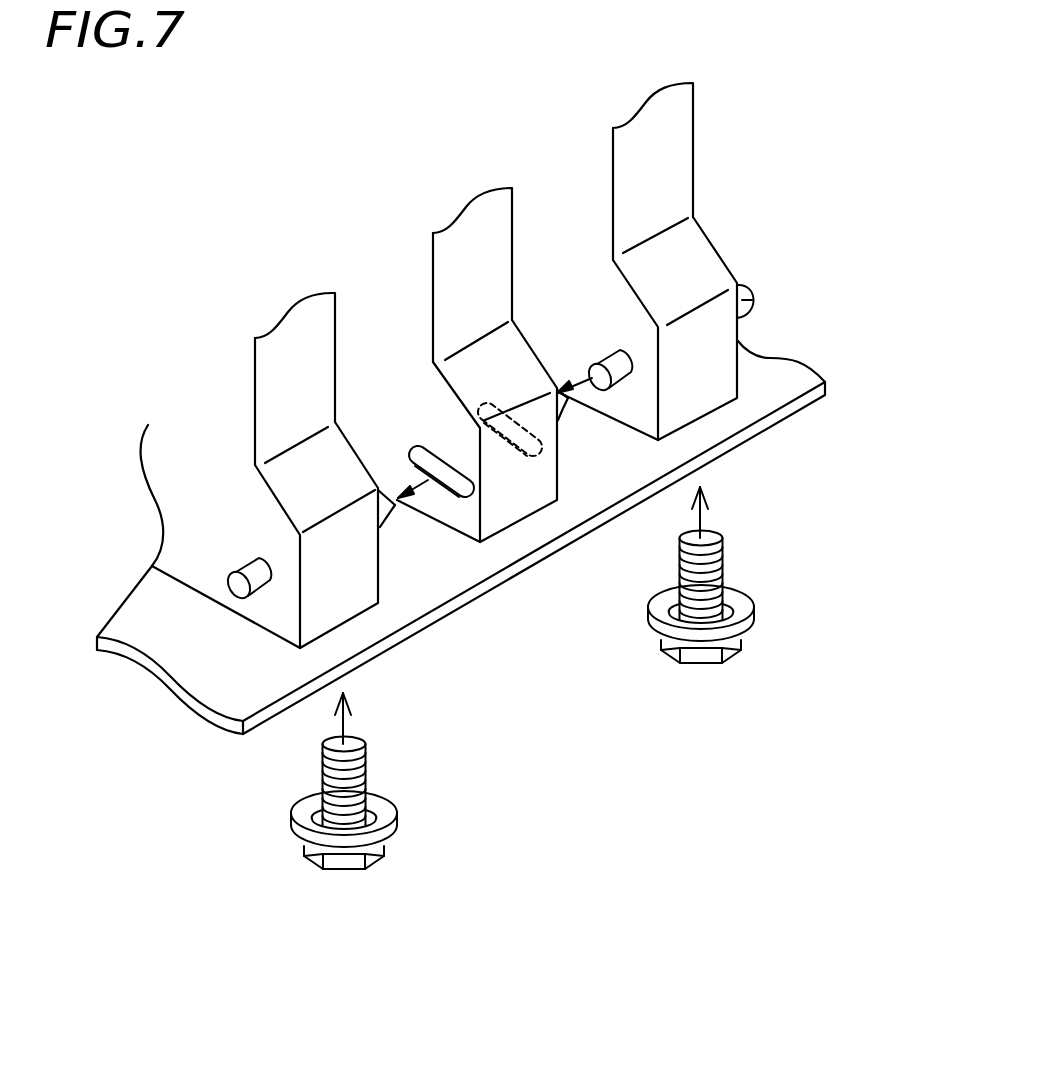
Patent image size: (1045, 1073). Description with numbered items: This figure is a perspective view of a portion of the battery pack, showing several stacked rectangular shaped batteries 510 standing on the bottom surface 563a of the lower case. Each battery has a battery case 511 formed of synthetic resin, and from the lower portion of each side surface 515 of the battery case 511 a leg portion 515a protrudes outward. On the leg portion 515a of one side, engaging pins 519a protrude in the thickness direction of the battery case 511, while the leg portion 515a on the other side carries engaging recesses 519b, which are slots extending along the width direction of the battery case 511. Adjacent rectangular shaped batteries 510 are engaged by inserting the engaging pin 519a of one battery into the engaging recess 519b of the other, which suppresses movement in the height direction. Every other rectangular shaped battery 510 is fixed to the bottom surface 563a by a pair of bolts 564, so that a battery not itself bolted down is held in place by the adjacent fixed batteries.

The rectangular shaped battery 510 is at (571, 403).
The battery case 511 is at (195, 542).
The side surface 515 is at (315, 360).
The leg portion 515a is at (345, 607).
The engaging pin 519a is at (232, 588).
The engaging recess 519b is at (445, 470).
The bottom surface 563a is at (738, 454).
The bolt 564 is at (338, 870).